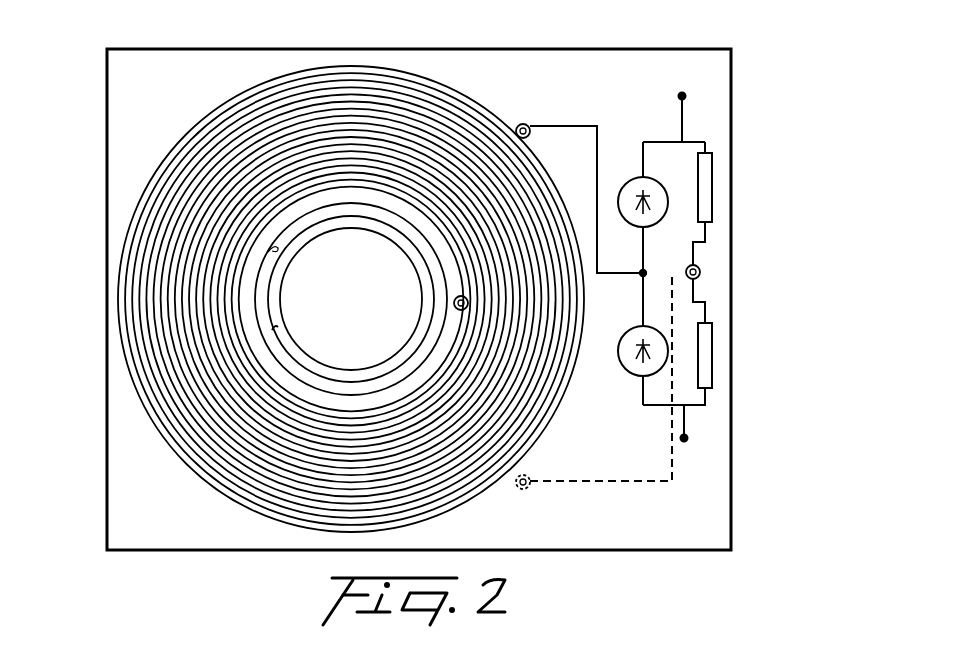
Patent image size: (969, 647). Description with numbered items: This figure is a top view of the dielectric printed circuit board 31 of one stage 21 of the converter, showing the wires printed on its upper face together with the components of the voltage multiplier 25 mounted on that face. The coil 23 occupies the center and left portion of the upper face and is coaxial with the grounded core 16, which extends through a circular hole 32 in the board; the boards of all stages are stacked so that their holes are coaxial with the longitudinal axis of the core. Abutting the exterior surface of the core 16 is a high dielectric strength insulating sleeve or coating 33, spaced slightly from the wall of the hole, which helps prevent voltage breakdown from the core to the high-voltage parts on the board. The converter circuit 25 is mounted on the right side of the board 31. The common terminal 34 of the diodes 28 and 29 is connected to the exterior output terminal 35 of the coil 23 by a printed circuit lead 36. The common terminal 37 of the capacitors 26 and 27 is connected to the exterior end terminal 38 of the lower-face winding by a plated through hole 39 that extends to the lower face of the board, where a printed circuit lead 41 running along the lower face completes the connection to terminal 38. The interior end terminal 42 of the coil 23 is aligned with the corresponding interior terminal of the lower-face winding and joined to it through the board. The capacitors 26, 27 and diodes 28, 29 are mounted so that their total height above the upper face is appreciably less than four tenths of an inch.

The stage 21 is at (507, 34).
The coil 23 is at (233, 103).
The circular hole 32 is at (268, 252).
The electrical insulating sleeve or coating 33 is at (275, 328).
The core 16 is at (333, 274).
The interior end terminal 42 is at (453, 305).
The exterior output terminal 35 is at (520, 123).
The printed circuit lead 36 is at (558, 124).
The voltage multiplier 25 is at (682, 253).
The diode 28 is at (629, 178).
The capacitor 26 is at (707, 176).
The common terminal 37 is at (696, 266).
The plated through hole 39 is at (696, 278).
The common terminal 34 is at (641, 276).
The capacitor 27 is at (706, 358).
The diode 29 is at (628, 367).
The exterior end terminal 38 is at (515, 490).
The printed circuit lead 41 is at (627, 483).
The printed circuit board 31 is at (705, 528).